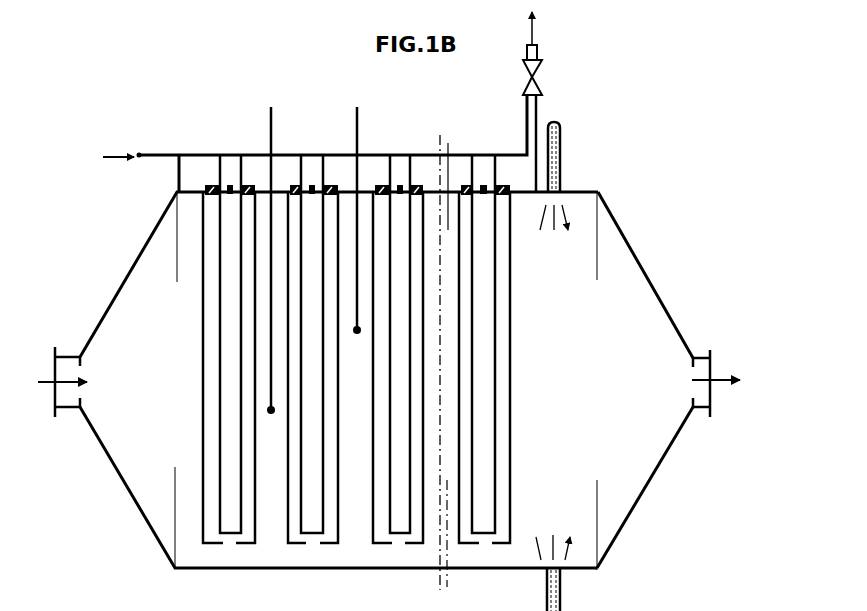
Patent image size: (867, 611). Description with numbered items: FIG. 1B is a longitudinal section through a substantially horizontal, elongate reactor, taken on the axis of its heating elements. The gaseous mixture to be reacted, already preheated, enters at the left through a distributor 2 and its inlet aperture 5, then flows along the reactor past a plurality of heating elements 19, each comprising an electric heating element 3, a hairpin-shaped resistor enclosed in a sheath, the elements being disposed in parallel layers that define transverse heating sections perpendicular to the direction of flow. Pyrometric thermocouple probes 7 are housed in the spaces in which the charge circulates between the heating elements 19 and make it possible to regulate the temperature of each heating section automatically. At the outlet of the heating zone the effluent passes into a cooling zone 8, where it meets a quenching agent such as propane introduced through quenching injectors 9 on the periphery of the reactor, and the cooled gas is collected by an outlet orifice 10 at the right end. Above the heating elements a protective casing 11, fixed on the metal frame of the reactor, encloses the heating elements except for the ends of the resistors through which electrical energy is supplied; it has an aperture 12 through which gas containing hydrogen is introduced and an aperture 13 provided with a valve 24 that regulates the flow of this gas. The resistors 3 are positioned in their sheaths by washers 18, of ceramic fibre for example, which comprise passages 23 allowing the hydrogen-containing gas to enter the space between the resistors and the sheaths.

The distributor 2 is at (127, 288).
The electric heating element 3 is at (218, 202).
The inlet aperture 5 is at (70, 347).
The pyrometric thermocouple probe 7 is at (274, 118).
The cooling zone 8 is at (636, 252).
The quenching injector 9 is at (561, 145).
The outlet orifice 10 is at (696, 356).
The protective casing 11 is at (343, 152).
The aperture 12 is at (162, 152).
The aperture 13 is at (537, 110).
The washer 18 is at (500, 188).
The heating element 19 is at (200, 202).
The passage 23 is at (407, 188).
The valve 24 is at (540, 64).